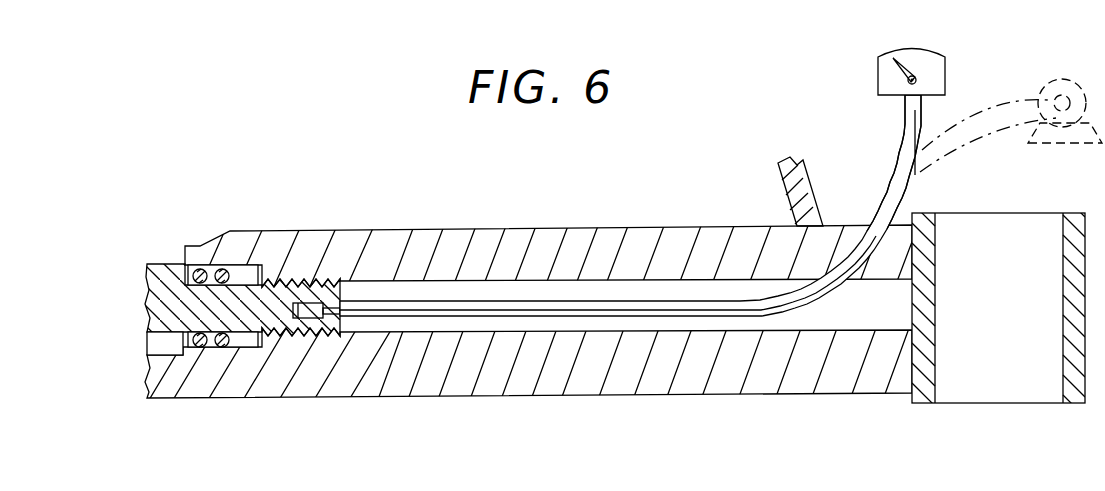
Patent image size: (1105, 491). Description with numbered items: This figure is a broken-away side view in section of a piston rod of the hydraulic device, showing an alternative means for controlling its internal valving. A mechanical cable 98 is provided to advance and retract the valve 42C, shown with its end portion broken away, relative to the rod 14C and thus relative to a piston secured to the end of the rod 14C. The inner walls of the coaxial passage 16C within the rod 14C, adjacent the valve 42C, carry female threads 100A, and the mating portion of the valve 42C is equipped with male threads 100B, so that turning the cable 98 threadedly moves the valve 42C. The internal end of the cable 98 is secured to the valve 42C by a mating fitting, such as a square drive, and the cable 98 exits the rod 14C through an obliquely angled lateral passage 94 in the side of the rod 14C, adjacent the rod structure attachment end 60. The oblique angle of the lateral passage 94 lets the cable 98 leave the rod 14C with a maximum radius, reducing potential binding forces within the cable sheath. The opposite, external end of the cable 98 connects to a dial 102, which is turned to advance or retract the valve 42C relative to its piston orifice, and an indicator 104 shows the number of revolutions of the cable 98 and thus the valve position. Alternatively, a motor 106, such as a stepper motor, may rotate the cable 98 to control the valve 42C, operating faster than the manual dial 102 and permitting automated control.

The rod 14C is at (590, 227).
The coaxial passage 16C is at (805, 320).
The valve 42C is at (146, 308).
The rod structure attachment end 60 is at (905, 398).
The obliquely angled lateral passage 94 is at (864, 226).
The mechanical cable 98 is at (902, 143).
The female threads 100A is at (299, 285).
The male threads 100B is at (340, 300).
The dial 102 is at (878, 70).
The indicator 104 is at (908, 50).
The motor 106 is at (1062, 78).